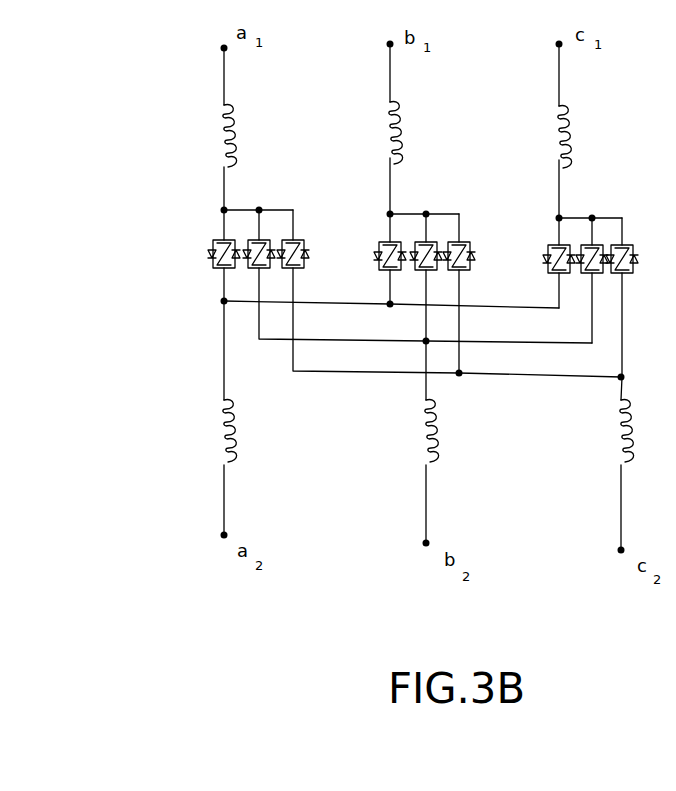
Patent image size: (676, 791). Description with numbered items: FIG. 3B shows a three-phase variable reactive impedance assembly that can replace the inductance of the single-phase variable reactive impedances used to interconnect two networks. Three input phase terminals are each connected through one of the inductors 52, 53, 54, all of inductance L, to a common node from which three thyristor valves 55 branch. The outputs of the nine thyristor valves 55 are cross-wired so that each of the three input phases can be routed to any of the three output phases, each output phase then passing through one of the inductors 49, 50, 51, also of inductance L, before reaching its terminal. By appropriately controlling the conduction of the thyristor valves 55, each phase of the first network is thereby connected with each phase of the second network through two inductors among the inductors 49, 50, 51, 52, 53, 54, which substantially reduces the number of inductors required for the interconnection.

The inductor 49 is at (216, 433).
The inductor 50 is at (420, 440).
The inductor 51 is at (615, 437).
The inductor 52 is at (216, 136).
The inductor 53 is at (382, 132).
The inductor 54 is at (553, 133).
The thyristor valves 55 is at (199, 249).